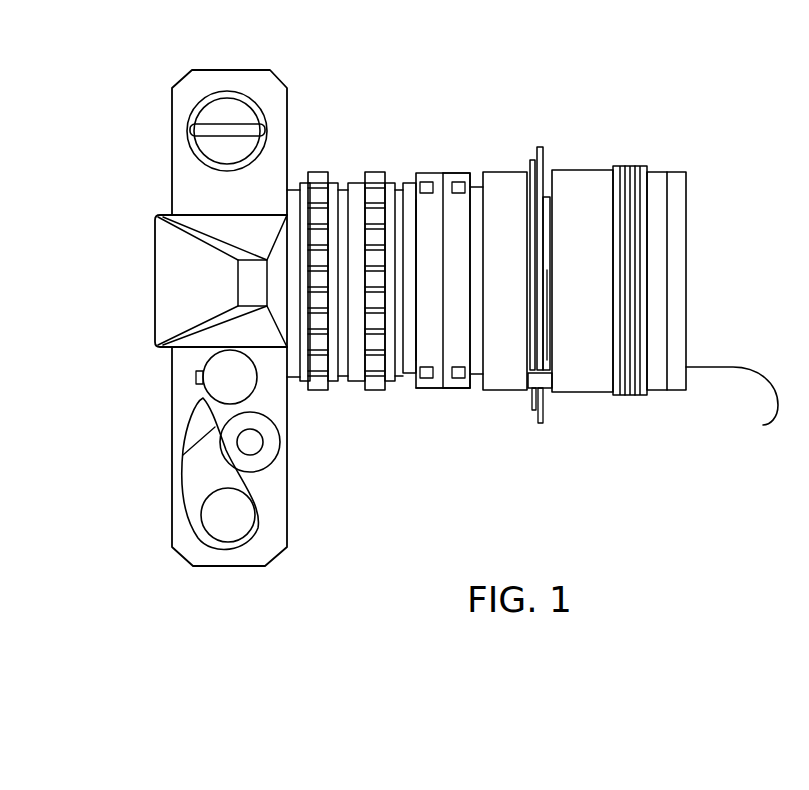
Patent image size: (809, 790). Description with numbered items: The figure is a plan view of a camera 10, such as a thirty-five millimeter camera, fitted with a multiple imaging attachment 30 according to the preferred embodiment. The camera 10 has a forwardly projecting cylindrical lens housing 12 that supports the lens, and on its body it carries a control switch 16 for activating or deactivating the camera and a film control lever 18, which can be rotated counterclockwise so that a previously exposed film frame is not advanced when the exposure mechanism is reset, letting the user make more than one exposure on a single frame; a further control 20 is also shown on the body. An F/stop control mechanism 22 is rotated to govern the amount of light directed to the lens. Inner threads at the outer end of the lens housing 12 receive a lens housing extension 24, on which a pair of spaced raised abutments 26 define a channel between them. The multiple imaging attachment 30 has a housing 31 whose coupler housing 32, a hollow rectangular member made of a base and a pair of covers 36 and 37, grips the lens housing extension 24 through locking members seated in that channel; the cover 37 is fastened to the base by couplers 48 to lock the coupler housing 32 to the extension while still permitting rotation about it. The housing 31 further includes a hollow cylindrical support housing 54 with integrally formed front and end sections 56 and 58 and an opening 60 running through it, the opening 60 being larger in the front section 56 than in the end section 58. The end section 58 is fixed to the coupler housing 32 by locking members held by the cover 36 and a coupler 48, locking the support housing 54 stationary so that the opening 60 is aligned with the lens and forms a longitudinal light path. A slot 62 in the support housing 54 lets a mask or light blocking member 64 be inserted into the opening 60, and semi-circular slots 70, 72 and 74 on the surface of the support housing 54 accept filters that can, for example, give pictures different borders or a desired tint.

The camera 10 is at (238, 58).
The cylindrical lens housing 12 is at (347, 388).
The control switch 16 is at (258, 462).
The film control lever 18 is at (182, 488).
The release button 20 is at (196, 377).
The F/stop control mechanism 22 is at (313, 172).
The lens housing extension 24 is at (407, 183).
The raised abutments 26 is at (411, 185).
The multiple imaging attachment 30 is at (601, 409).
The housing 31 is at (513, 404).
The coupler housing 32 is at (447, 407).
The cover 36 is at (466, 207).
The cover 37 is at (425, 270).
The couplers 48 is at (455, 181).
The support housing 54 is at (664, 402).
The front section 56 is at (685, 172).
The end section 58 is at (538, 146).
The opening 60 is at (732, 405).
The slot 62 is at (549, 175).
The mask 64 is at (552, 427).
The semi-circular slot 70 is at (621, 166).
The semi-circular slot 72 is at (632, 166).
The semi-circular slot 74 is at (643, 166).